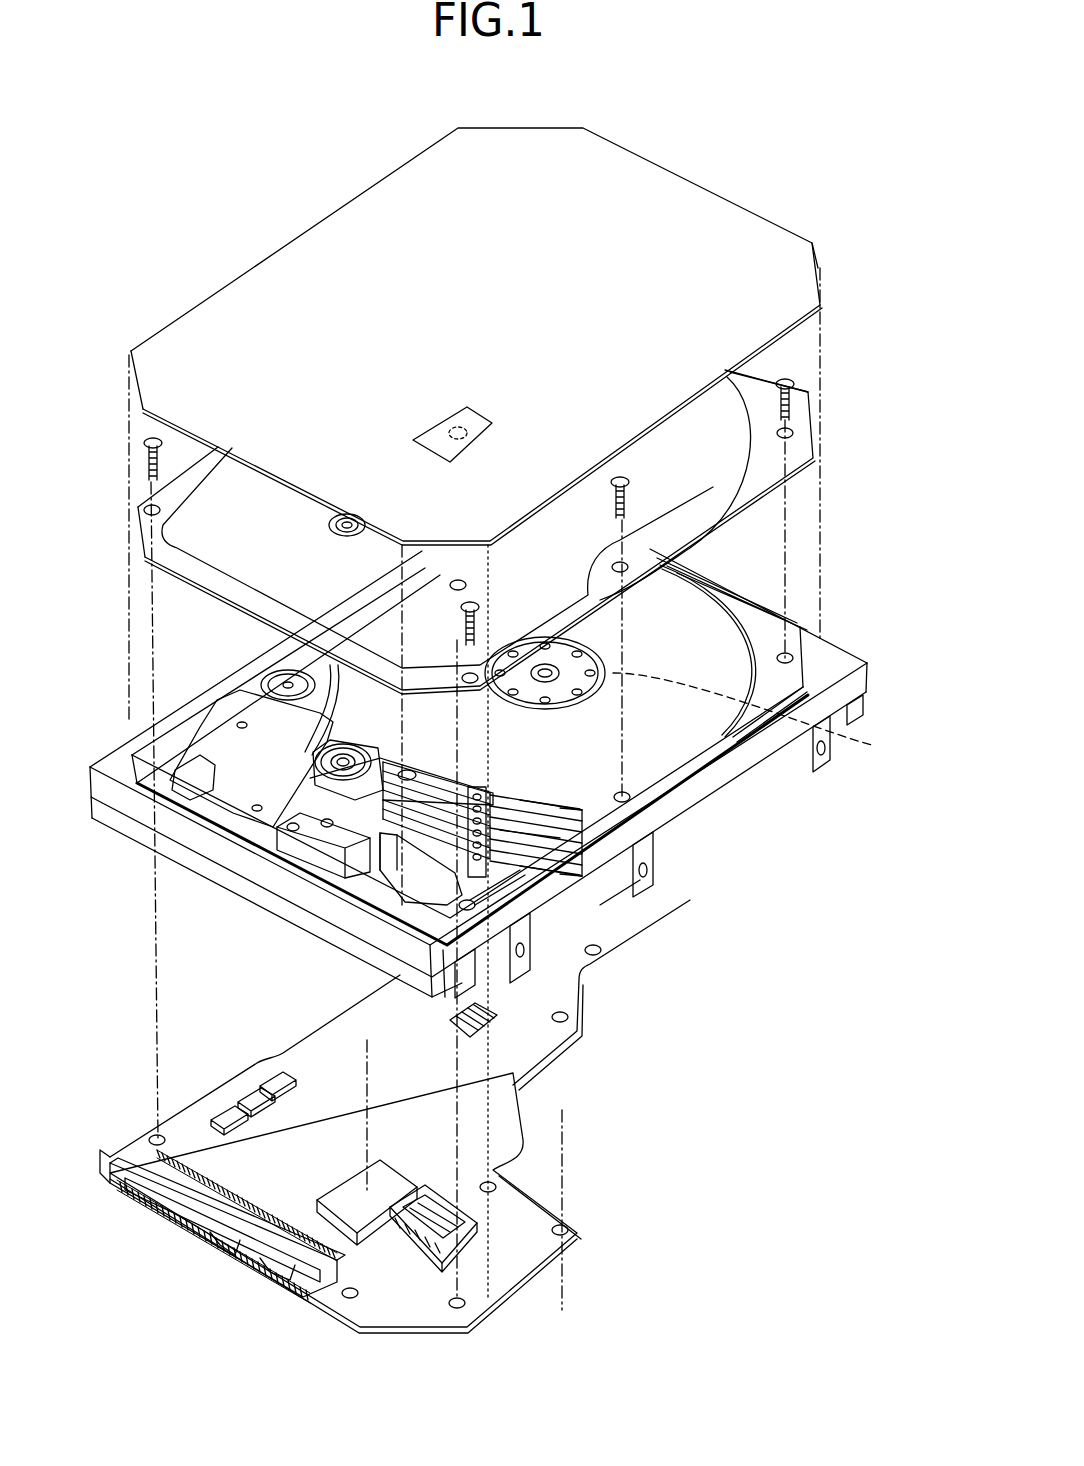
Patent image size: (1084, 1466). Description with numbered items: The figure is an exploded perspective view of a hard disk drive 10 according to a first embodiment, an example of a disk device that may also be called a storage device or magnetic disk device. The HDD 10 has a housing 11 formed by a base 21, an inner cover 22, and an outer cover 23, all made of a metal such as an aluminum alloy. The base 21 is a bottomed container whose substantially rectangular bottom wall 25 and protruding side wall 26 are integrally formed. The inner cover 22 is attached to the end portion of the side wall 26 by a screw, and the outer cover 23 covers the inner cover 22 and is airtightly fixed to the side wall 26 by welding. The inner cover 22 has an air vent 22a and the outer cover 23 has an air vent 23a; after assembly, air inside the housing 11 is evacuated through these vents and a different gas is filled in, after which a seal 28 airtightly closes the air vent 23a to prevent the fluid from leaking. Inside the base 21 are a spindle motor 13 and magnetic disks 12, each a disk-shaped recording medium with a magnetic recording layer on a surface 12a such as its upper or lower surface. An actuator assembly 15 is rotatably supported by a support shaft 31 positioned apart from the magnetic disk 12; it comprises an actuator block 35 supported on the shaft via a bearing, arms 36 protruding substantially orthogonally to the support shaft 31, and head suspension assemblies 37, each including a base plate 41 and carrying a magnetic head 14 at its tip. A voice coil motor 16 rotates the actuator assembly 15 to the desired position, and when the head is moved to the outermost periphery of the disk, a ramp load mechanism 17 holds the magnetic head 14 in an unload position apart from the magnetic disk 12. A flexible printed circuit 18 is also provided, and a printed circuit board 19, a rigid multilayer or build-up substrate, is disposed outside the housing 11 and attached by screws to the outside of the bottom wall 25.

The hard disk drive 10 is at (193, 256).
The housing 11 is at (514, 793).
The magnetic disk 12 is at (697, 736).
The surface 12a is at (288, 679).
The spindle motor 13 is at (758, 718).
The magnetic head 14 is at (583, 825).
The actuator assembly 15 is at (432, 768).
The voice coil motor 16 is at (248, 793).
The ramp load mechanism 17 is at (600, 803).
The flexible printed circuit 18 is at (398, 897).
The printed circuit board 19 is at (525, 1102).
The base 21 is at (493, 887).
The inner cover 22 is at (710, 480).
The air vent 22a is at (450, 585).
The outer cover 23 is at (640, 178).
The air vent 23a is at (460, 442).
The bottom wall 25 is at (500, 890).
The side wall 26 is at (613, 900).
The seal 28 is at (488, 410).
The support shaft 31 is at (345, 757).
The actuator block 35 is at (300, 753).
The arm 36 is at (472, 790).
The head suspension assembly 37 is at (544, 799).
The base plate 41 is at (537, 800).